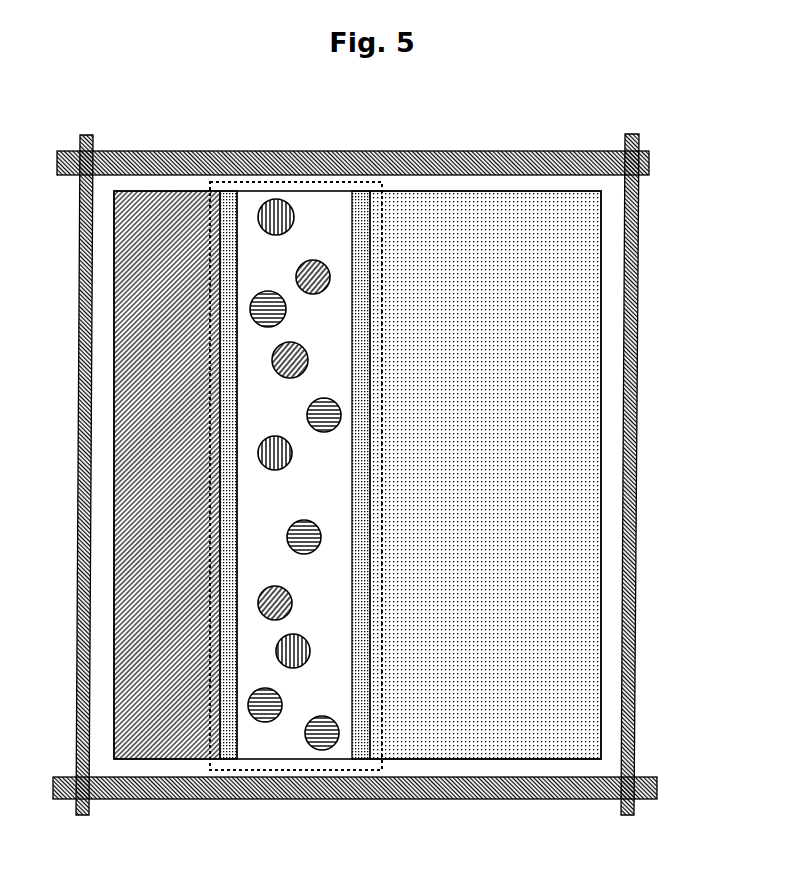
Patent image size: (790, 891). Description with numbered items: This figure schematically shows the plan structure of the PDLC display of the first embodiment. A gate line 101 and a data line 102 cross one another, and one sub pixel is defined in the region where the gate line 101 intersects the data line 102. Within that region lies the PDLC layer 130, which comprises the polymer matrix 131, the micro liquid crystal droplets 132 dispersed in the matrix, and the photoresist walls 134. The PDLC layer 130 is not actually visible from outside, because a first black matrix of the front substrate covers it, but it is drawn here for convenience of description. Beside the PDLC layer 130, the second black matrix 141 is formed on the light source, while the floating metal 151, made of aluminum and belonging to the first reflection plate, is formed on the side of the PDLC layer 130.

The gate line 101 is at (158, 160).
The data line 102 is at (636, 530).
The PDLC layer 130 is at (306, 180).
The polymer matrix 131 is at (249, 740).
The micro liquid crystal droplets 132 is at (322, 747).
The photoresist walls 134 is at (360, 747).
The second black matrix 141 is at (135, 738).
The floating metal 151 is at (493, 730).